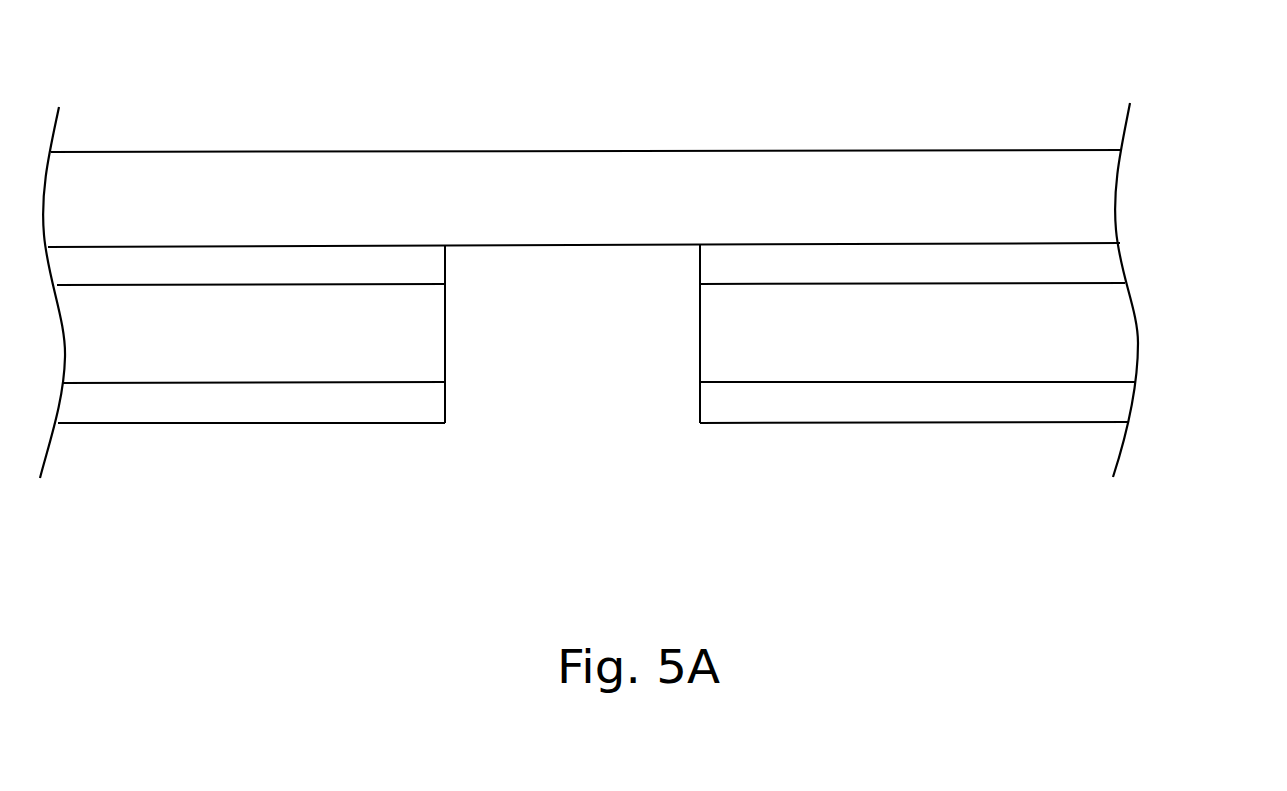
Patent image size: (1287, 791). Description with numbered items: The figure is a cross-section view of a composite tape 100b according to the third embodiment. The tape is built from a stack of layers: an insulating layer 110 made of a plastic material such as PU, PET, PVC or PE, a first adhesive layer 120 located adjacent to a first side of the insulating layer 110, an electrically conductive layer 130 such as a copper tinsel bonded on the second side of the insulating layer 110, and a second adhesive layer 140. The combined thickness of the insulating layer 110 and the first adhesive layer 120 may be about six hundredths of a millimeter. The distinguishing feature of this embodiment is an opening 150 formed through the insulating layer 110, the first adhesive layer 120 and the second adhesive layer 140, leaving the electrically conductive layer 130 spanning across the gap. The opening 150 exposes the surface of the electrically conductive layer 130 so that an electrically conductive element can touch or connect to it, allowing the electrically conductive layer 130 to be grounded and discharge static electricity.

The composite tape 100b is at (312, 32).
The insulating layer 110 is at (1112, 327).
The first adhesive layer 120 is at (1112, 397).
The electrically conductive layer 130 is at (1085, 190).
The second adhesive layer 140 is at (1100, 263).
The opening 150 is at (573, 308).